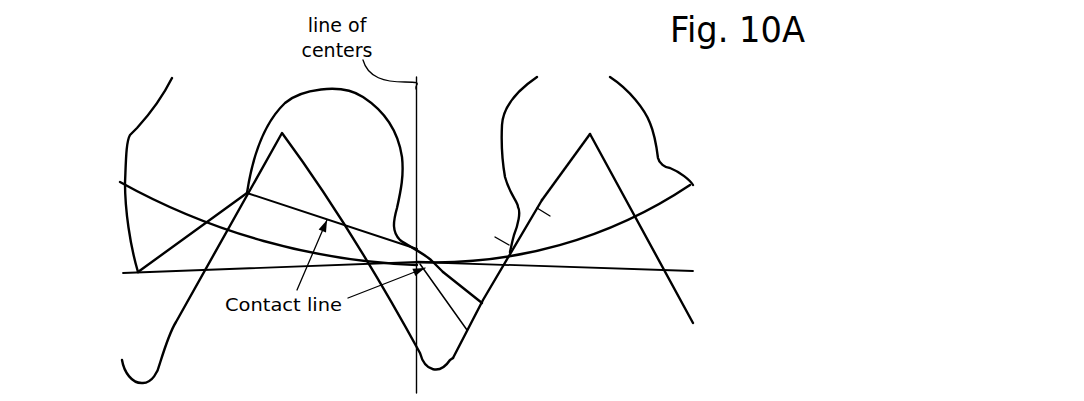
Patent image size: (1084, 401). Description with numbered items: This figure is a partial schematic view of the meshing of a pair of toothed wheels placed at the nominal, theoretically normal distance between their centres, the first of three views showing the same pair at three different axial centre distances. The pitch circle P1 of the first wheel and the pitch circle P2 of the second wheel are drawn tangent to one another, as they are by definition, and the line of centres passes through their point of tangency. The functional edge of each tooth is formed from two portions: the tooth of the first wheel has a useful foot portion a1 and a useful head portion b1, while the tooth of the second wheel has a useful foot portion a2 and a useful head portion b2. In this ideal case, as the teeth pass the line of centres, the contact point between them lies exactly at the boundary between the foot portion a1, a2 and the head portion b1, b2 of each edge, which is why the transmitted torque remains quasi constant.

The pitch circle of wheel 1 P1 is at (138, 273).
The pitch circle of wheel 2 P2 is at (686, 268).
The useful foot portion a1 is at (493, 289).
The useful head portion b1 is at (559, 178).
The useful foot portion a2 is at (513, 225).
The useful head portion b2 is at (488, 282).